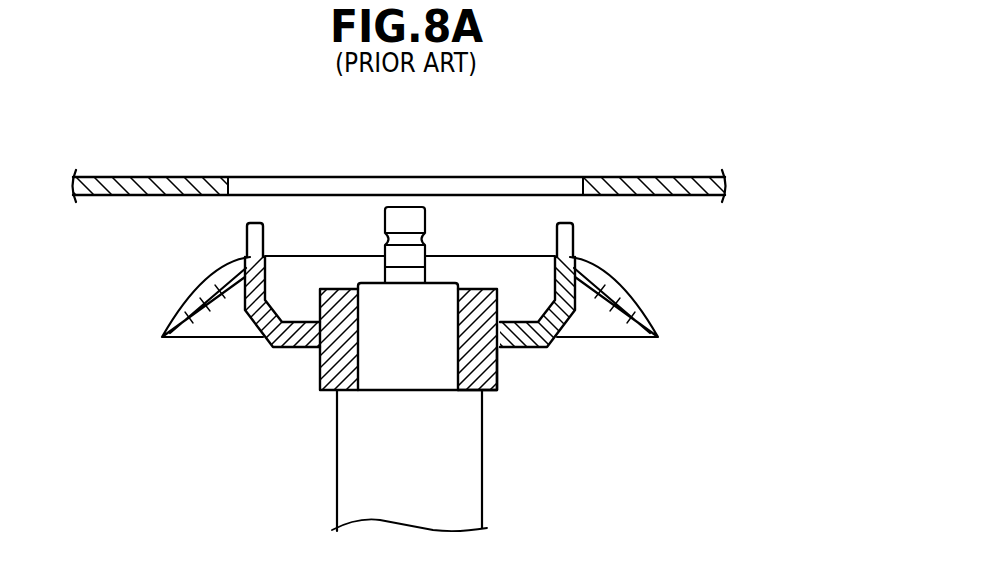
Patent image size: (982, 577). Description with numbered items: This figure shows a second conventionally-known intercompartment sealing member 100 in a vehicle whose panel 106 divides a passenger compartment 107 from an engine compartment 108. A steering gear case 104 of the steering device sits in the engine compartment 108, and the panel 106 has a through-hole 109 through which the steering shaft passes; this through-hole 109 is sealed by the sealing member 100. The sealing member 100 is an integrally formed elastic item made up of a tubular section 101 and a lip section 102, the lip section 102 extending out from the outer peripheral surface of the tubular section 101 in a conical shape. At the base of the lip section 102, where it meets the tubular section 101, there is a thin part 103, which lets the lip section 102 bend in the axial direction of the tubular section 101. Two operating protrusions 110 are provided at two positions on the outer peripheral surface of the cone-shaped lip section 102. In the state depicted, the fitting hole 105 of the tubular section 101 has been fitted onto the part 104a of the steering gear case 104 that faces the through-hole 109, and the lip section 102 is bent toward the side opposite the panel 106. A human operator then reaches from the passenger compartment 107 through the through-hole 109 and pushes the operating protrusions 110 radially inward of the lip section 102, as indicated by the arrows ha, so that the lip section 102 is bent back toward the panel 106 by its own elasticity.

The intercompartment sealing member 100 is at (527, 363).
The tubular section 101 is at (497, 375).
The lip section 102 is at (650, 322).
The thin part 103 is at (577, 265).
The steering gear case 104 is at (497, 502).
The part of the steering case facing the through-hole 104a is at (372, 352).
The fitting hole 105 is at (362, 372).
The panel 106 is at (635, 183).
The passenger compartment 107 is at (142, 136).
The engine compartment 108 is at (142, 279).
The through-hole 109 is at (578, 178).
The operating protrusions 110 is at (253, 222).
The arrows ha is at (303, 206).